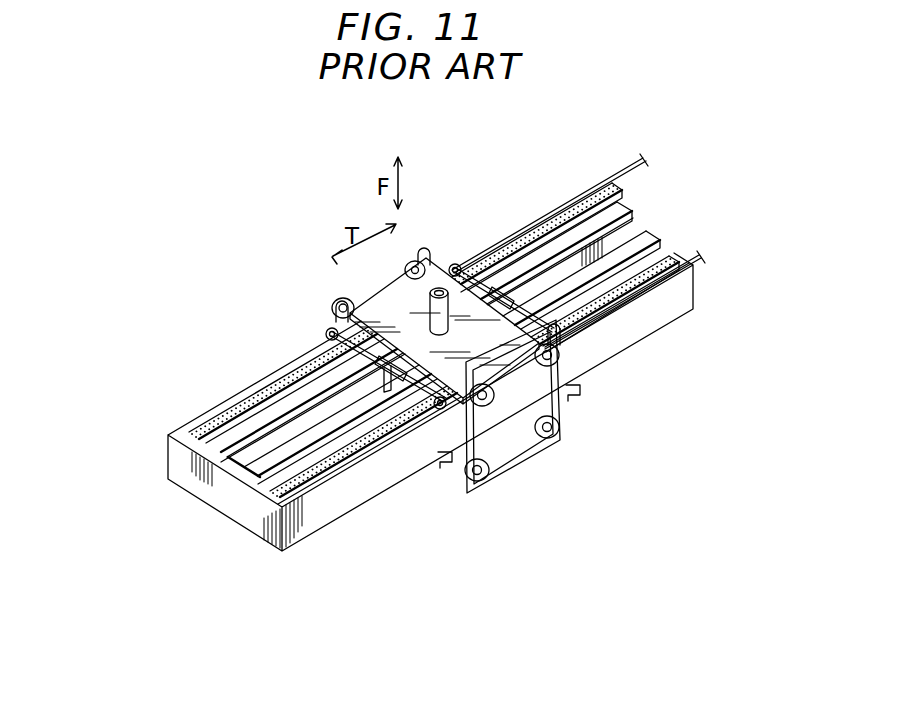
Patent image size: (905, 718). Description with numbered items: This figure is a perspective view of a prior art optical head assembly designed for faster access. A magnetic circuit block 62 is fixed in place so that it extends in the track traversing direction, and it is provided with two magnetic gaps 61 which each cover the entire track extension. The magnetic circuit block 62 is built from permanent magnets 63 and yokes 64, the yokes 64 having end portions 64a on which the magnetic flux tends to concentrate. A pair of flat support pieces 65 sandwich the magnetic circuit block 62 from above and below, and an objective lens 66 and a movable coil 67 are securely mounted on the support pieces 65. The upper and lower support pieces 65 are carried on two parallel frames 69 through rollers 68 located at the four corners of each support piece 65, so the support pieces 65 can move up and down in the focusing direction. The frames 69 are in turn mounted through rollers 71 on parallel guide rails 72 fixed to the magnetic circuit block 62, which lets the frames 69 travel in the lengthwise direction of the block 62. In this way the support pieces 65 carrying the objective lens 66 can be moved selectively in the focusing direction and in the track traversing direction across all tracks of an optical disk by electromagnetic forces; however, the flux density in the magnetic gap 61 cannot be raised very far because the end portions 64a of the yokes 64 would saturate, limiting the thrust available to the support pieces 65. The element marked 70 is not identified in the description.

The magnetic gap 61 is at (258, 423).
The magnetic circuit block 62 is at (261, 547).
The permanent magnet 63 is at (617, 192).
The yoke 64 is at (660, 238).
The end portion 64a is at (210, 493).
The support piece 65 is at (580, 305).
The objective lens 66 is at (480, 258).
The movable coil 67 is at (384, 388).
The roller 68 is at (342, 300).
The frame 69 is at (420, 252).
The shaft 70 is at (492, 262).
The roller 71 is at (326, 336).
The guide rail 72 is at (613, 180).